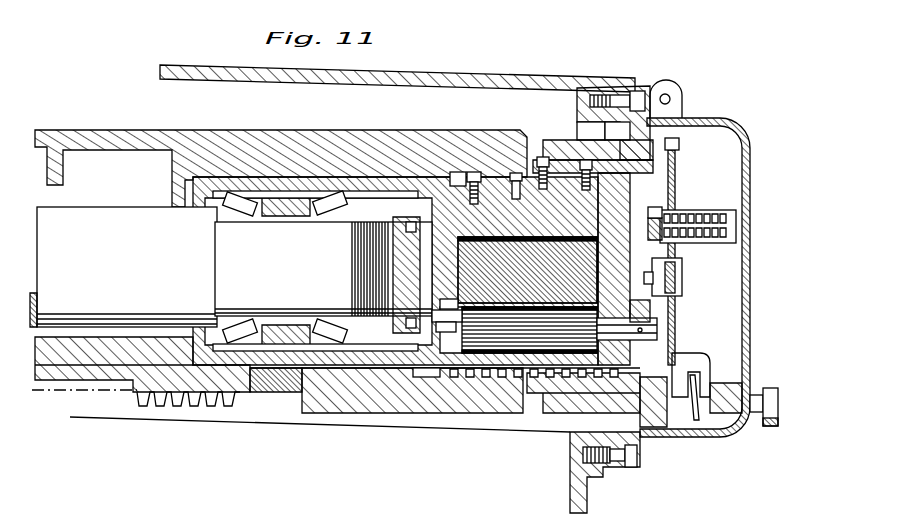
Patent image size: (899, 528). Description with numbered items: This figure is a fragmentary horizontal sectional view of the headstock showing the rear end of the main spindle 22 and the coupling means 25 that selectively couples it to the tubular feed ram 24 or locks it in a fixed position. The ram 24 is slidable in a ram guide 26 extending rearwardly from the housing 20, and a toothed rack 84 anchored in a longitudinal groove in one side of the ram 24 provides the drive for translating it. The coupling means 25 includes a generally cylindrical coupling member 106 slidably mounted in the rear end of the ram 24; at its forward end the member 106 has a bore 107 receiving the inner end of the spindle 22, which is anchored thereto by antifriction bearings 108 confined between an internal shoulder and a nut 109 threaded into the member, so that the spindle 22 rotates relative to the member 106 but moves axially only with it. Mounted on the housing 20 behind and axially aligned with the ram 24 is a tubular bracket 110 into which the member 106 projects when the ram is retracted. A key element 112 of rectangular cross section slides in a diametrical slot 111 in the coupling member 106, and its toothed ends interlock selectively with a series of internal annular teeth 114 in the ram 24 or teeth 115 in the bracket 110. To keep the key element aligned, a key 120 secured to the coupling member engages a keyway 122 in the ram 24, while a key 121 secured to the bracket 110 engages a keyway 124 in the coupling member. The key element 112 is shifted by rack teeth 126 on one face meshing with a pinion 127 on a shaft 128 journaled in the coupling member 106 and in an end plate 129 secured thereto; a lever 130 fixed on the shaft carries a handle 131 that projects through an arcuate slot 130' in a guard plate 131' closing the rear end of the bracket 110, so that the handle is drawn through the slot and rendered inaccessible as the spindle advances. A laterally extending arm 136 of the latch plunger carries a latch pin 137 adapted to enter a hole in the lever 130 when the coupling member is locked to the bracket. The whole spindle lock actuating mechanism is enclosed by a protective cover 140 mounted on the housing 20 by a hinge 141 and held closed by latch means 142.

The housing 20 is at (630, 474).
The main spindle 22 is at (42, 212).
The feed ram 24 is at (130, 136).
The coupling means 25 is at (656, 192).
The ram guide 26 is at (452, 81).
The toothed rack 84 is at (158, 397).
The coupling member 106 is at (437, 181).
The bore 107 is at (290, 192).
The antifriction bearings 108 is at (240, 216).
The nut 109 is at (212, 205).
The tubular bracket 110 is at (676, 152).
The diametrical slot 111 is at (527, 258).
The key element 112 is at (553, 246).
The internal annular teeth of the ram 114 is at (470, 371).
The internal annular teeth of the bracket 115 is at (568, 373).
The key 120 is at (486, 185).
The key 121 is at (585, 190).
The keyway 122 is at (498, 172).
The keyway 124 is at (548, 198).
The rack teeth 126 is at (462, 308).
The pinion 127 is at (546, 309).
The shaft 128 is at (455, 347).
The end plate 129 is at (618, 367).
The lever 130 is at (666, 315).
The arcuate slot 130' is at (688, 203).
The handle 131 is at (720, 226).
The guard plate 131' is at (698, 363).
The arm 136 is at (683, 266).
The latch pin 137 is at (644, 278).
The protective cover 140 is at (751, 302).
The hinge 141 is at (670, 97).
The latch means 142 is at (697, 412).